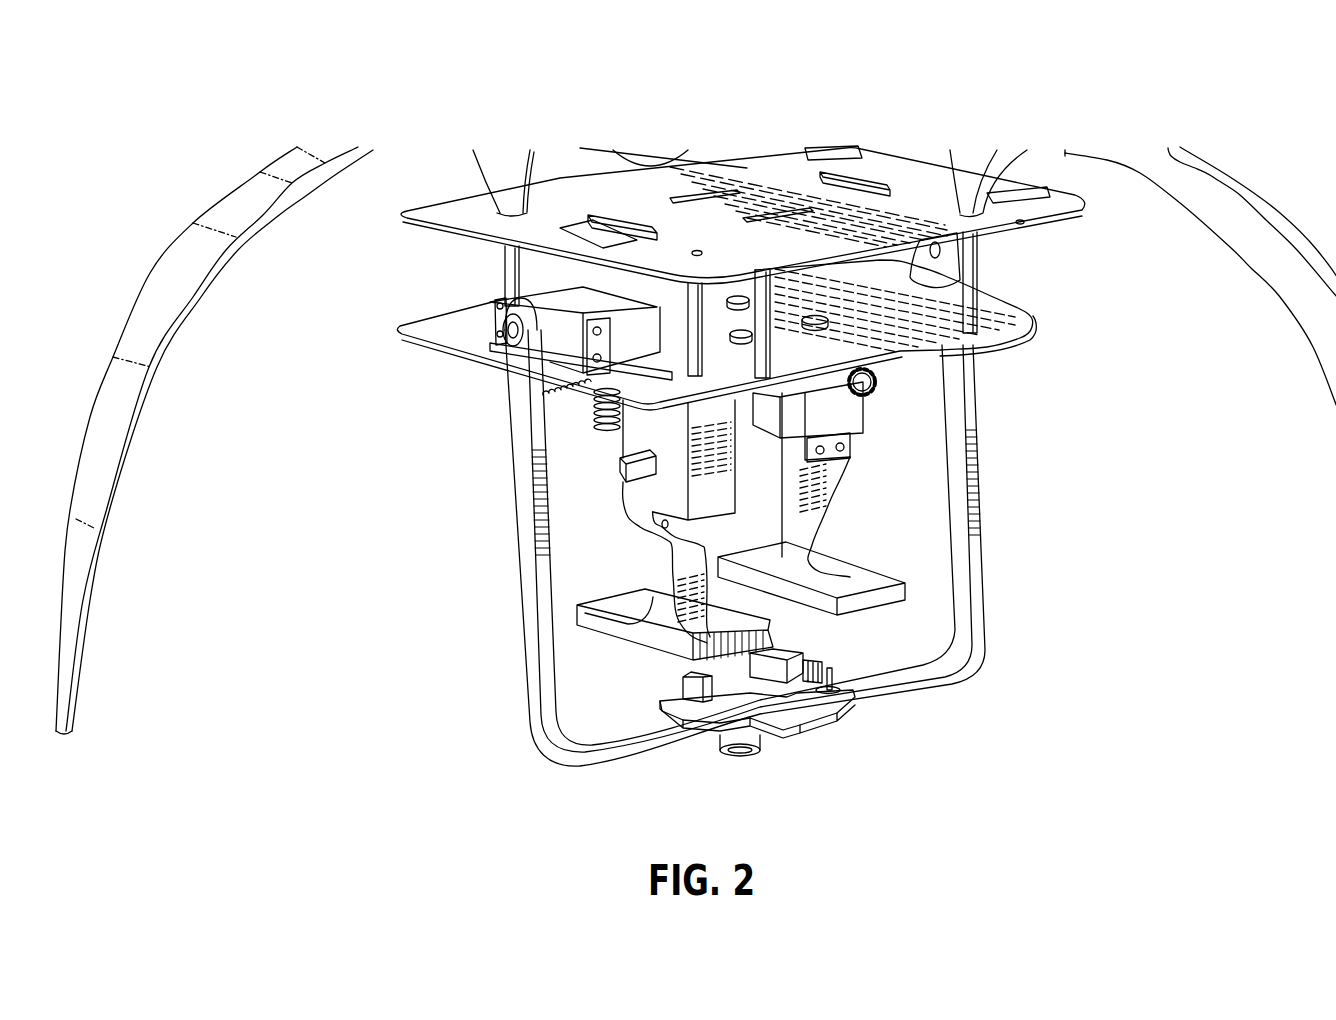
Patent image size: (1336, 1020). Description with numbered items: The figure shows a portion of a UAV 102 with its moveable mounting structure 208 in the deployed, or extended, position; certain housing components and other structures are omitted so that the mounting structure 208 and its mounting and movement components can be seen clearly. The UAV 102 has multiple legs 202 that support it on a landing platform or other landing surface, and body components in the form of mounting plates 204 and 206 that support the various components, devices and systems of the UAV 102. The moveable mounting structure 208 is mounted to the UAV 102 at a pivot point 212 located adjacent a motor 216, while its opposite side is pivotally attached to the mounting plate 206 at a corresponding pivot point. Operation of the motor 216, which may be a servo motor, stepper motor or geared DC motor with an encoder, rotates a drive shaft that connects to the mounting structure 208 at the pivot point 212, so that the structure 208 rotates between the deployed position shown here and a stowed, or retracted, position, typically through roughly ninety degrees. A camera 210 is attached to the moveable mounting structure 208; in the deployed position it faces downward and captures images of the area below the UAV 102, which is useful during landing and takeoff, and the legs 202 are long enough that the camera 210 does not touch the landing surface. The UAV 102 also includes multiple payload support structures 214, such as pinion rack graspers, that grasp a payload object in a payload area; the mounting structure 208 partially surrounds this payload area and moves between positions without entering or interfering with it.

The UAV 102 is at (938, 78).
The legs 202 is at (152, 278).
The mounting plate 204 is at (400, 216).
The mounting plate 206 is at (398, 332).
The moveable mounting structure 208 is at (524, 521).
The camera 210 is at (740, 742).
The pivot point 212 is at (510, 342).
The payload support structures 214 is at (663, 630).
The motor 216 is at (560, 298).